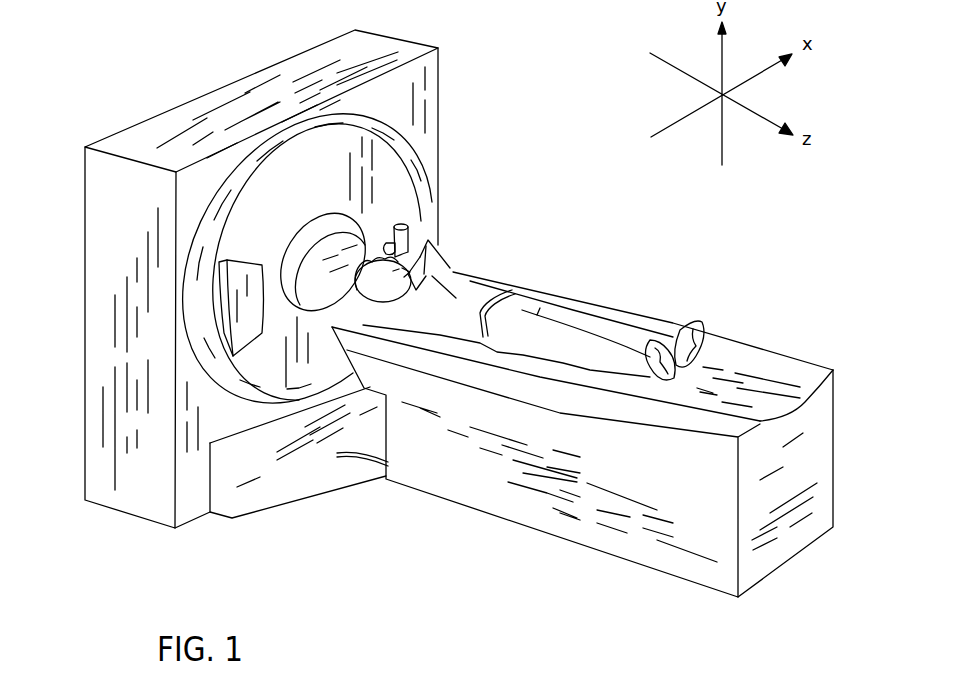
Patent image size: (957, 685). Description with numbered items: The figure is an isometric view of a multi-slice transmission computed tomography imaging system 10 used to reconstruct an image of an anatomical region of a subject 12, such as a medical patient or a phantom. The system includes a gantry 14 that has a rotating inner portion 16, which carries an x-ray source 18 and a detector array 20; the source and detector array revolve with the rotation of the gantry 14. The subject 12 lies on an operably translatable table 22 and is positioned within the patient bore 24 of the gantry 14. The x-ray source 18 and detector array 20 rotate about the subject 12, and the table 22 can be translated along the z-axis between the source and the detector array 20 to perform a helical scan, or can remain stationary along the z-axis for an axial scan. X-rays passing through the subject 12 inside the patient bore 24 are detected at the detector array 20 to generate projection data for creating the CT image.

The multi-slice transmission computed tomography (CT) imaging system 10 is at (354, 488).
The subject 12 is at (453, 272).
The gantry 14 is at (120, 180).
The rotating inner portion 16 is at (422, 152).
The x-ray source 18 is at (412, 232).
The detector array 20 is at (240, 340).
The table 22 is at (733, 341).
The patient bore 24 is at (355, 237).